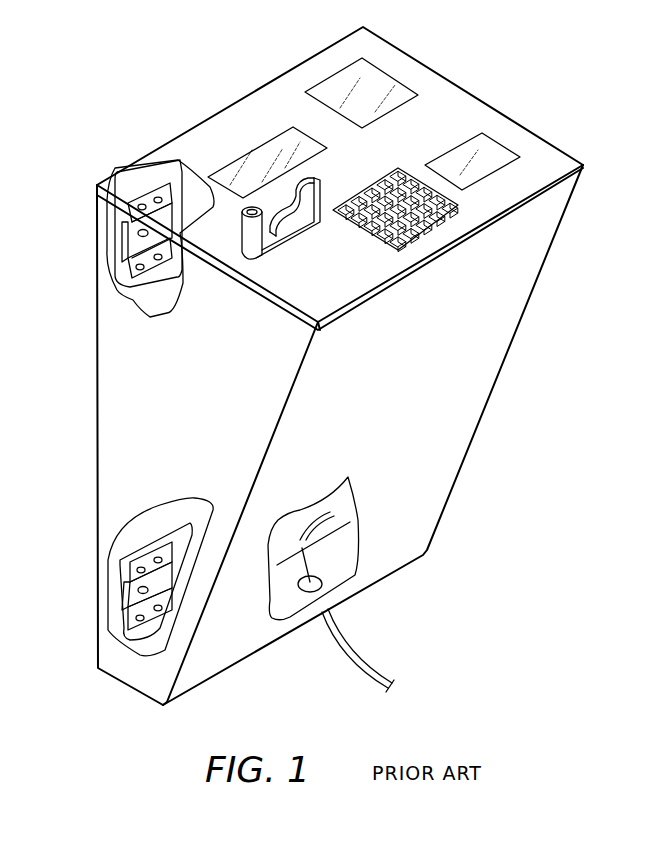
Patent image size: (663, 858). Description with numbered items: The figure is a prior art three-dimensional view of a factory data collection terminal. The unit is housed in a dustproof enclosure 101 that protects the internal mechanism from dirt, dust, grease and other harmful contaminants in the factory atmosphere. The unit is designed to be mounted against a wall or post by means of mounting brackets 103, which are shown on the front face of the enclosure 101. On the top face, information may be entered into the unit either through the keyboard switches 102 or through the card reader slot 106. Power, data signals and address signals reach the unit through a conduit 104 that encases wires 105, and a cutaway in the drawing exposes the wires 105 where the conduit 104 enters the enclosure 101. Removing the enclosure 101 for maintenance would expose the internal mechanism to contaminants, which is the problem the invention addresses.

The dustproof enclosure 101 is at (300, 72).
The keyboard switches 102 is at (368, 235).
The mounting brackets 103 is at (128, 215).
The conduit 104 is at (342, 642).
The wires 105 is at (303, 548).
The card reader slot 106 is at (316, 178).